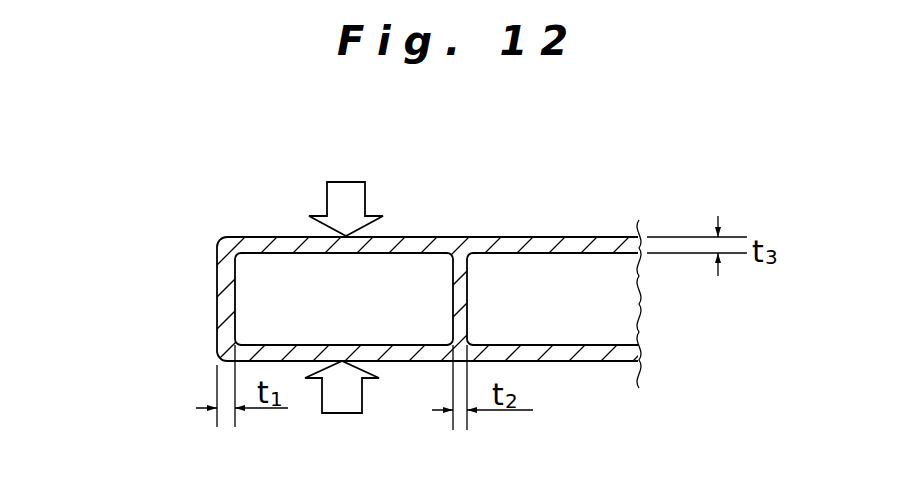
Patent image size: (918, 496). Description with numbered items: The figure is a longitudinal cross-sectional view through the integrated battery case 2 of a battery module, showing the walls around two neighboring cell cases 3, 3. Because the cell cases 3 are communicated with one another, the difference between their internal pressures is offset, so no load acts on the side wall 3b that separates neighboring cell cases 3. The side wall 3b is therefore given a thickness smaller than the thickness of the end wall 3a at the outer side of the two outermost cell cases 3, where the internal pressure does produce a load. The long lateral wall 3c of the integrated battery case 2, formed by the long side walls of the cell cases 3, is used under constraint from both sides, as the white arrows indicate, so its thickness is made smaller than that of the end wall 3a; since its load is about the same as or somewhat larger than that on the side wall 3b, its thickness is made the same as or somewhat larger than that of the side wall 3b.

The integrated battery case 2 is at (261, 227).
The cell case 3 is at (289, 320).
The end wall 3a is at (226, 295).
The side wall 3b is at (455, 315).
The long lateral wall 3c is at (400, 248).